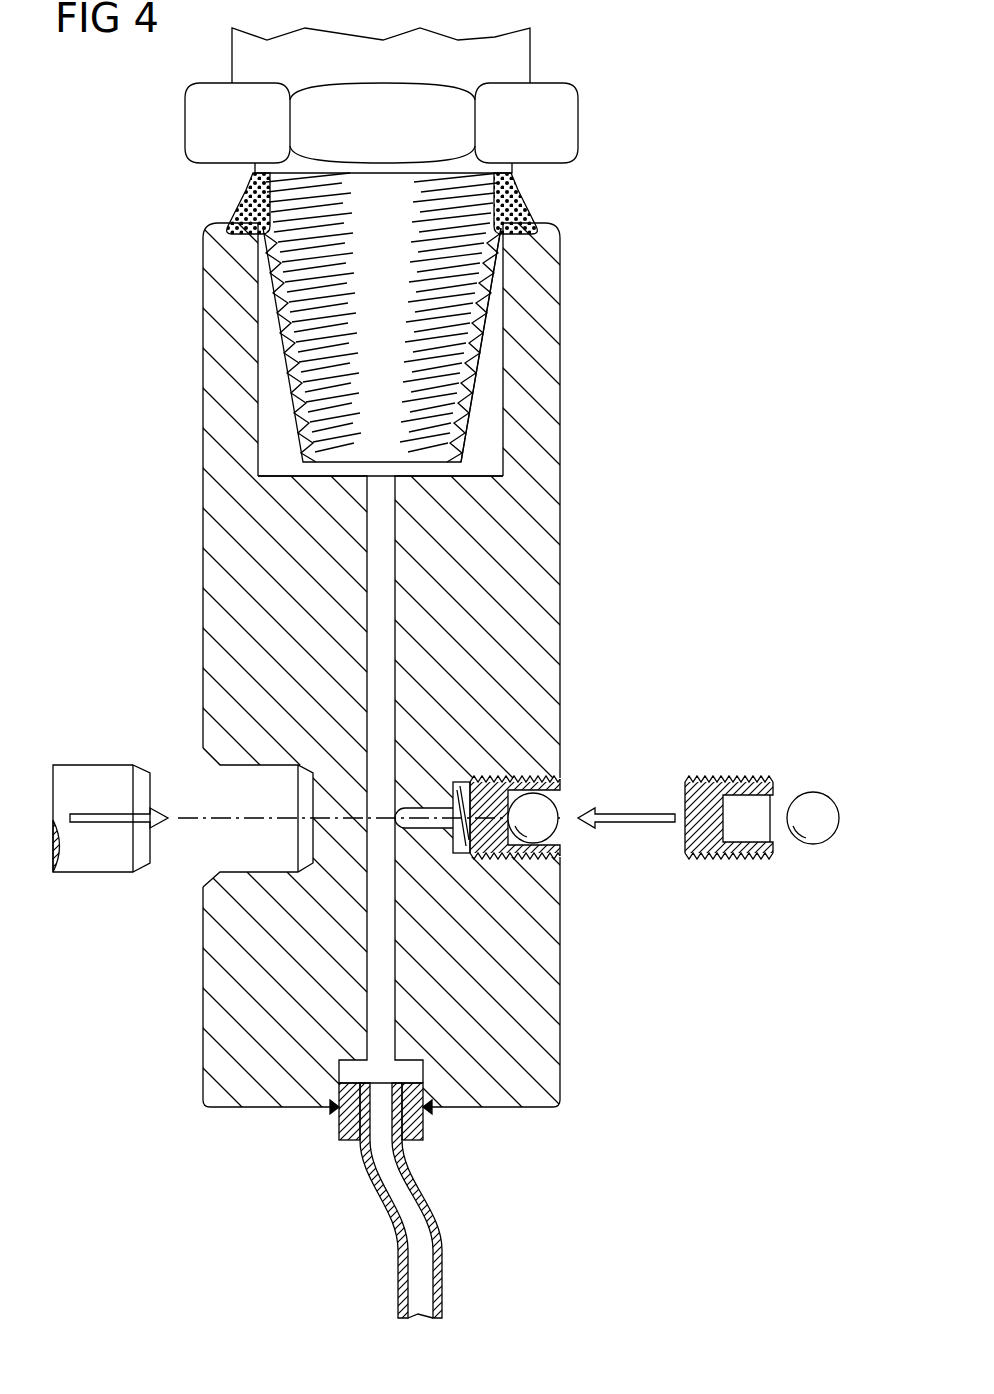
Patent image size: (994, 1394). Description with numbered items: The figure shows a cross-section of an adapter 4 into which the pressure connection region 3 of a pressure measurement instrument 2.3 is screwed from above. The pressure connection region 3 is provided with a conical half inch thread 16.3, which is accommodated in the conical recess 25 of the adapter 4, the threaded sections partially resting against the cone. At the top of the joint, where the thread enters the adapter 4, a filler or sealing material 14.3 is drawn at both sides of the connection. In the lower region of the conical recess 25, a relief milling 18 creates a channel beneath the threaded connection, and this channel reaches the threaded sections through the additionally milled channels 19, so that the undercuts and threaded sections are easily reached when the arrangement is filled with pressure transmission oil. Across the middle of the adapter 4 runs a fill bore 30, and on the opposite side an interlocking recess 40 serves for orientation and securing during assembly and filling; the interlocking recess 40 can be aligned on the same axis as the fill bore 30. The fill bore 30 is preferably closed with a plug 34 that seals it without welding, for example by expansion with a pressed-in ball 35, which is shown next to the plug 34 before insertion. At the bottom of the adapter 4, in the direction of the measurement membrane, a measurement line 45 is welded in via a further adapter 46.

The pressure measurement instrument 2.3 is at (517, 62).
The pressure connection region 3 is at (380, 215).
The sealing material 14.3 is at (247, 207).
The conical half inch thread 16.3 is at (488, 300).
The conical recess 25 is at (490, 367).
The additionally milled channels 19 is at (273, 418).
The relief milling 18 is at (327, 468).
The adapter 4 is at (545, 628).
The interlocking recess 40 is at (232, 853).
The fill bore 30 is at (440, 822).
The plug 34 is at (706, 777).
The ball 35 is at (810, 805).
The adapter 46 is at (338, 1128).
The measurement line 45 is at (443, 1238).